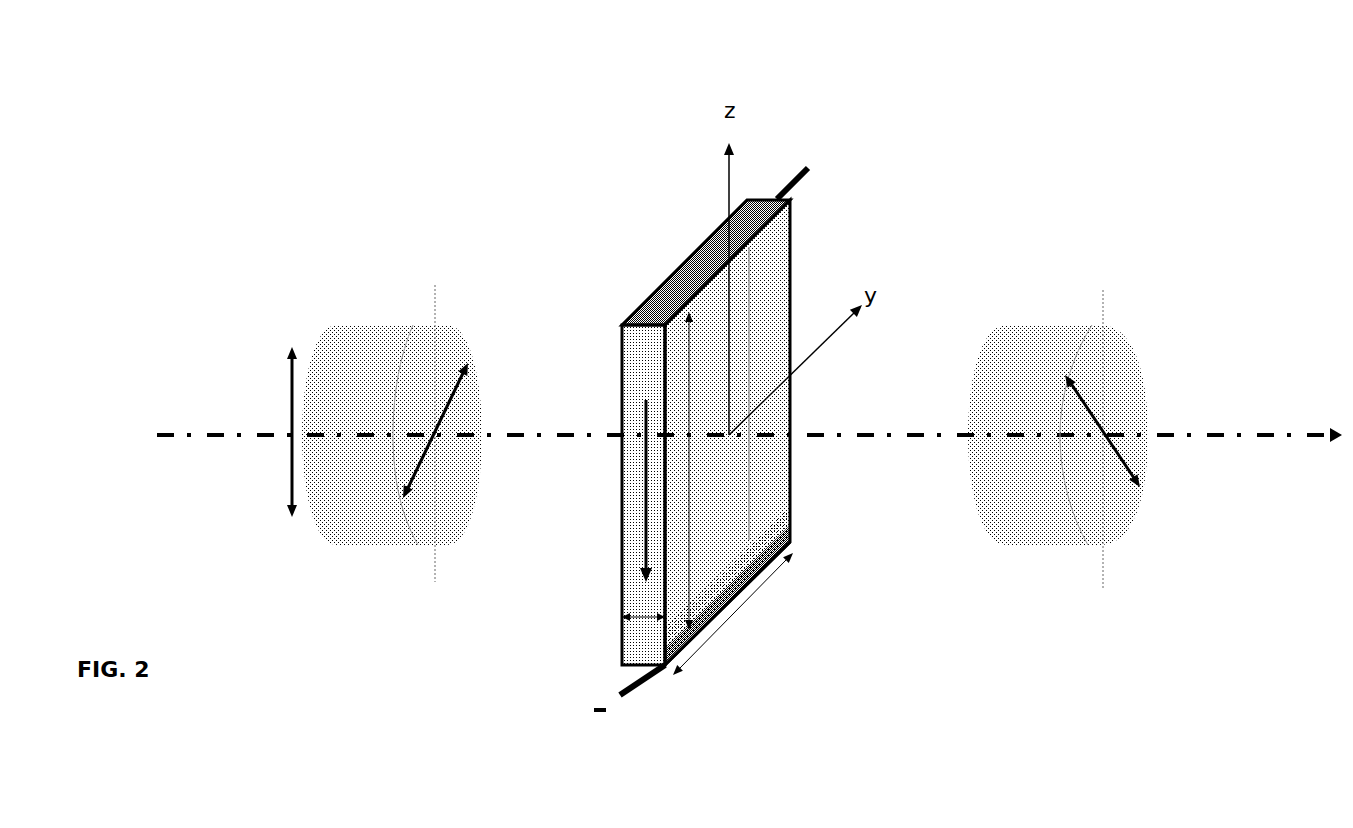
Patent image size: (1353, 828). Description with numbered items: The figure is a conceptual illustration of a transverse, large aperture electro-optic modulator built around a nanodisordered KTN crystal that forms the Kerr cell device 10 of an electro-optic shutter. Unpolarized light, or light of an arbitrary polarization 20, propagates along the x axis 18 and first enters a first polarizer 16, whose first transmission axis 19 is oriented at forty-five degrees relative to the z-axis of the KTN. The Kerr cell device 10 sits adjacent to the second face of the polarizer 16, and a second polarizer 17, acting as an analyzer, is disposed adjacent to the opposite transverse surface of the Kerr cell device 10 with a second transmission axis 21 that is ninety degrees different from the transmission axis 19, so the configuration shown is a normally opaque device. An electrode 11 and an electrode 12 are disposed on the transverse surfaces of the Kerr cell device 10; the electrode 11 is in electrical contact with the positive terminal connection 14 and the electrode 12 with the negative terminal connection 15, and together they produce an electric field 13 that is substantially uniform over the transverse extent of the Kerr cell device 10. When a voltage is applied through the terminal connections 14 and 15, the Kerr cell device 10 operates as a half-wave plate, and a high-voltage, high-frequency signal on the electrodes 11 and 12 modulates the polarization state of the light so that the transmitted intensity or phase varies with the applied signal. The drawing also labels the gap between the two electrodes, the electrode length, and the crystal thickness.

The Kerr cell device 10 is at (614, 95).
The electrode 11 is at (660, 285).
The electrode 12 is at (748, 583).
The electric field 13 is at (622, 555).
The positive terminal connection 14 is at (802, 165).
The negative terminal connection 15 is at (617, 688).
The first polarizer 16 is at (388, 325).
The second polarizer 17 is at (1071, 325).
The x axis 18 is at (183, 423).
The first transmission axis 19 is at (475, 355).
The arbitrary polarization 20 is at (285, 347).
The second transmission axis 21 is at (1143, 490).